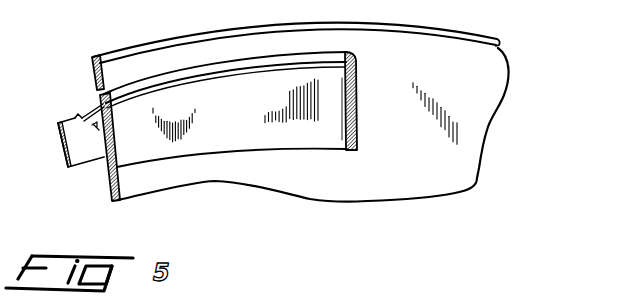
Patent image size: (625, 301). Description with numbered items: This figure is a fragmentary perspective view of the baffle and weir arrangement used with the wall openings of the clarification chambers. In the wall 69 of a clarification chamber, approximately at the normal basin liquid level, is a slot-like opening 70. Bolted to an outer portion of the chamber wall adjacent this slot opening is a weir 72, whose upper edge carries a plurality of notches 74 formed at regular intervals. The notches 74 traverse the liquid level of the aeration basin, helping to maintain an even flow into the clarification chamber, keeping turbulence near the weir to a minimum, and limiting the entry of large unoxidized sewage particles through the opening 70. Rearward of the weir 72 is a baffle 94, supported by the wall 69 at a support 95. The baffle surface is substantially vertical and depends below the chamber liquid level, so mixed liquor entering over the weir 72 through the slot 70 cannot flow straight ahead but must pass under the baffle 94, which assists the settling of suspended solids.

The wall 69 is at (401, 184).
The slot-like opening 70 is at (103, 92).
The weir 72 is at (59, 147).
The notches 74 is at (70, 118).
The baffle 94 is at (251, 118).
The baffle support 95 is at (357, 98).